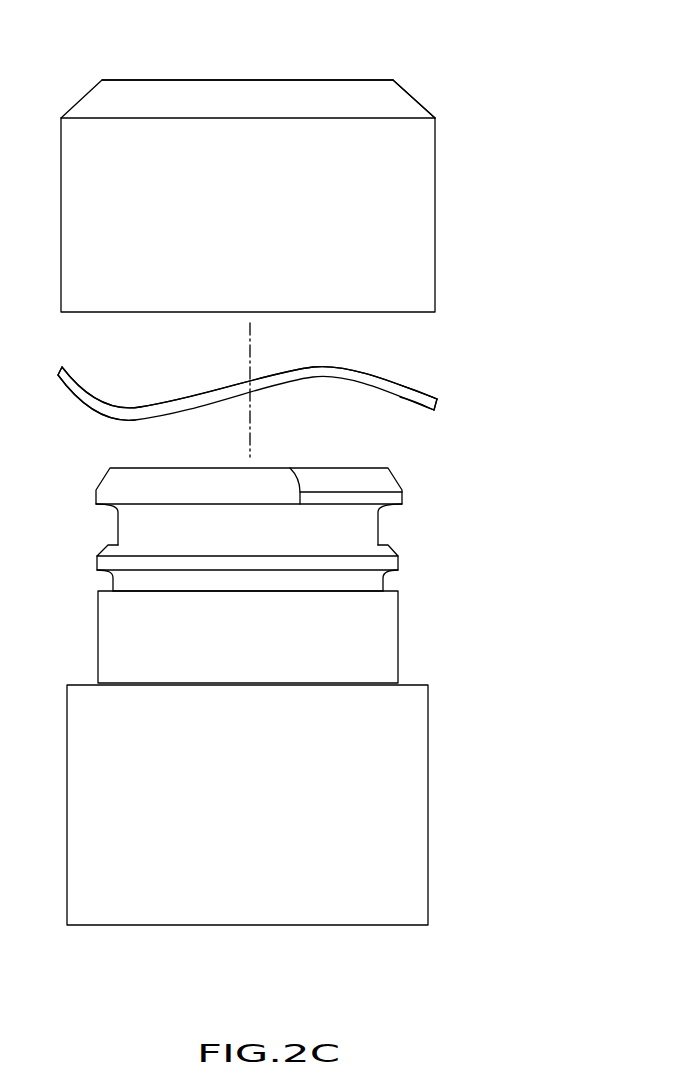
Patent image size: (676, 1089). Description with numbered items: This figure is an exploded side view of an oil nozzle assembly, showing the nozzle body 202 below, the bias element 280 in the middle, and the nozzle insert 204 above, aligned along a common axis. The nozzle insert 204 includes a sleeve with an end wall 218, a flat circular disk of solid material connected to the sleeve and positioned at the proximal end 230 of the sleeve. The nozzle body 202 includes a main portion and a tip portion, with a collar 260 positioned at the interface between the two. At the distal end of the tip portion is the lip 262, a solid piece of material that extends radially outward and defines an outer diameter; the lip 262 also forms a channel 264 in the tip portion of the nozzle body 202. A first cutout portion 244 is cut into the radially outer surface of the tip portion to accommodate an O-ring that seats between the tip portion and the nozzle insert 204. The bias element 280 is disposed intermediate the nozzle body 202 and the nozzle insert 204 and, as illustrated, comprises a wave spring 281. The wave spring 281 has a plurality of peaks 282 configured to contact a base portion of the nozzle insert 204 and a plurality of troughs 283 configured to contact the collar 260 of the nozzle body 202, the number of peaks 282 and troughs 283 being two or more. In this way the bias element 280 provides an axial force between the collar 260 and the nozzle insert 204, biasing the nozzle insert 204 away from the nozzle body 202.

The nozzle body 202 is at (417, 765).
The nozzle insert 204 is at (420, 210).
The end wall 218 is at (372, 80).
The proximal end 230 is at (325, 80).
The first cutout portion 244 is at (385, 583).
The collar 260 is at (417, 683).
The lip 262 is at (377, 482).
The channel 264 is at (378, 525).
The bias element 280 is at (438, 407).
The wave spring 281 is at (415, 402).
The peaks 282 is at (333, 363).
The troughs 283 is at (142, 417).